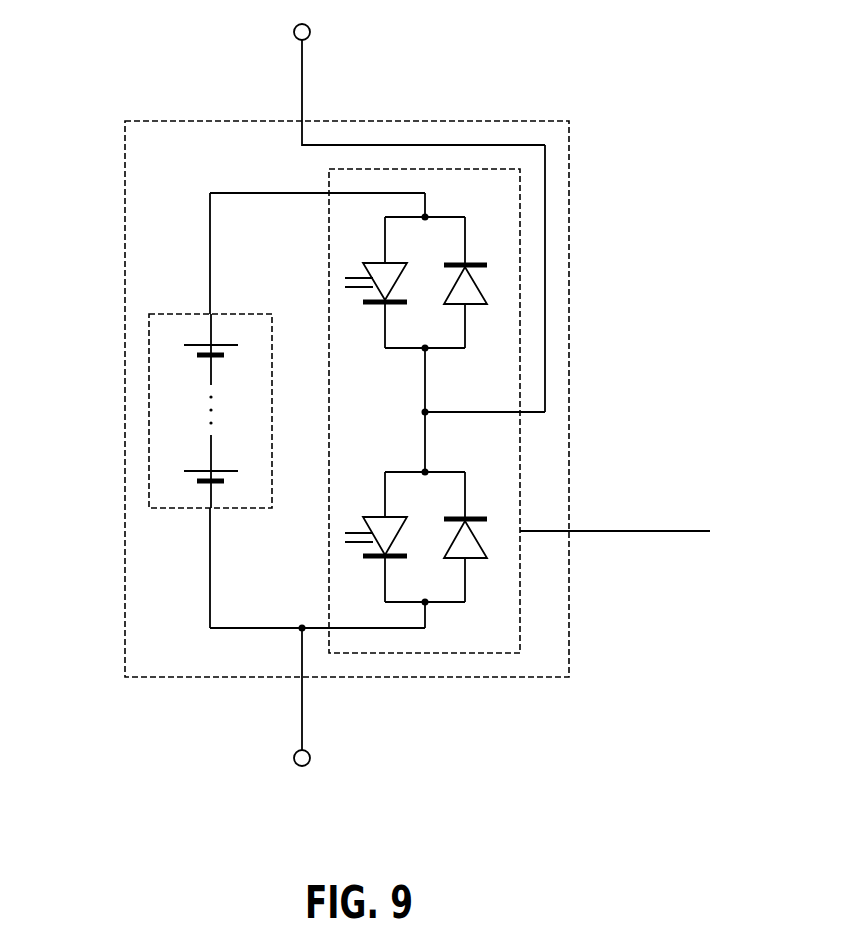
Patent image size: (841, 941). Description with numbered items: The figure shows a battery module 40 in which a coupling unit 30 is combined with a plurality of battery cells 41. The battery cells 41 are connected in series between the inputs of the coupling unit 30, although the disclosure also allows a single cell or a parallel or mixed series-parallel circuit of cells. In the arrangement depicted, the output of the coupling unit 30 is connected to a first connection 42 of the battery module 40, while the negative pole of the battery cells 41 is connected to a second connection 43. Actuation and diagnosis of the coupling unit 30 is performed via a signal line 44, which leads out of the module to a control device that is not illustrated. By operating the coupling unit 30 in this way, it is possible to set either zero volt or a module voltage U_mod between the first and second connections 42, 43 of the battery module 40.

The coupling unit 30 is at (520, 242).
The battery module 40 is at (569, 197).
The battery cells 41 is at (149, 405).
The first connection 42 is at (312, 30).
The second connection 43 is at (312, 757).
The signal line 44 is at (630, 531).